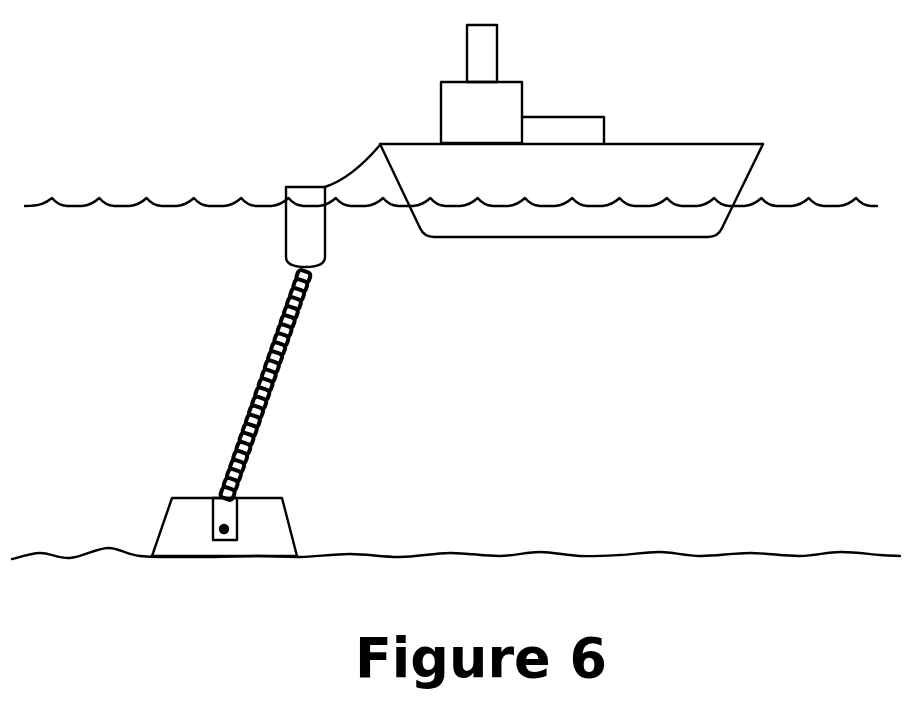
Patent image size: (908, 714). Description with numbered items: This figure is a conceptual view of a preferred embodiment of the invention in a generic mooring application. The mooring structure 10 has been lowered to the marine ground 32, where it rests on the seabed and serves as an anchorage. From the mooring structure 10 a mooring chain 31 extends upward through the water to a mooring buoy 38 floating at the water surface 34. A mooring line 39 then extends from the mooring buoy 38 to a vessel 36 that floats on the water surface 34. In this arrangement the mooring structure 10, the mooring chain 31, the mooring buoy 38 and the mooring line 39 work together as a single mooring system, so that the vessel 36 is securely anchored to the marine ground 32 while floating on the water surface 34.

The mooring structure 10 is at (273, 501).
The mooring chain 31 is at (285, 352).
The marine ground 32 is at (576, 553).
The water surface 34 is at (206, 203).
The vessel 36 is at (725, 148).
The mooring buoy 38 is at (307, 195).
The mooring line 39 is at (340, 181).